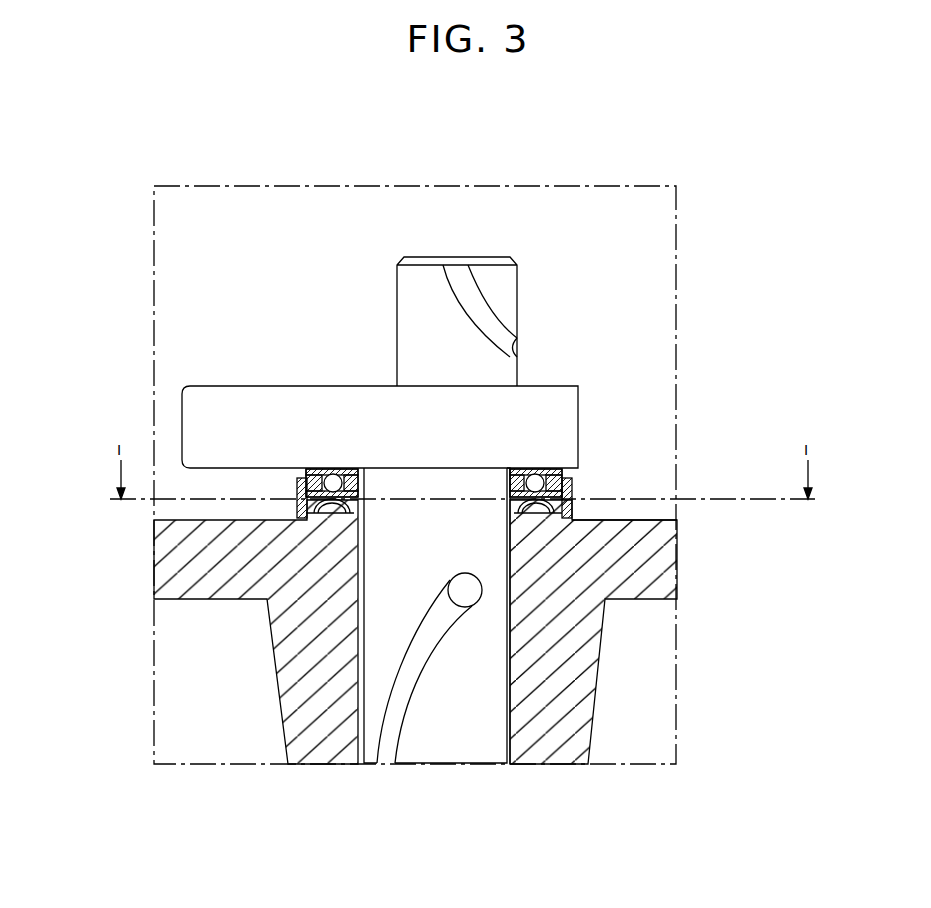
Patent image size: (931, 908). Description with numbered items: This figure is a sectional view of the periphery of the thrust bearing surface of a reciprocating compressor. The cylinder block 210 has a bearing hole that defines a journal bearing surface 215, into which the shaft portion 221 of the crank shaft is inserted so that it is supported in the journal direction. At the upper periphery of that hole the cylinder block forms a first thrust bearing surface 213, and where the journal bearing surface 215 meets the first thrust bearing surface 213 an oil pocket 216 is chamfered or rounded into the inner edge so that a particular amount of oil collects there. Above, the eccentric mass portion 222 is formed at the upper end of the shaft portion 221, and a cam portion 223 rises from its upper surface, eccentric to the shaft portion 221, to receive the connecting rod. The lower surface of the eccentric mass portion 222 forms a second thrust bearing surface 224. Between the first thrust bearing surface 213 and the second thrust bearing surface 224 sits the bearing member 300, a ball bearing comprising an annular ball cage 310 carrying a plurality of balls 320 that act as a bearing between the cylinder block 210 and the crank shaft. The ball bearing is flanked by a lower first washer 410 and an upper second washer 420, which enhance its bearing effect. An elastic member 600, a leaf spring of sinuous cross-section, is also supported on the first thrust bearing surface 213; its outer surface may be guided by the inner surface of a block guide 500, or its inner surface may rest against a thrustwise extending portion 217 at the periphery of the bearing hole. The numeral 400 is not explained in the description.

The cylinder block 210 is at (645, 604).
The first thrust bearing surface 213 is at (527, 517).
The journal bearing surface 215 is at (507, 724).
The oil pocket 216 is at (495, 488).
The thrustwise extending portion 217 is at (513, 516).
The shaft portion 221 is at (426, 732).
The eccentric mass portion 222 is at (197, 395).
The cam portion 223 is at (402, 293).
The second thrust bearing surface 224 is at (295, 485).
The bearing member 300 is at (745, 410).
The ball cage 310 is at (560, 482).
The balls 320 is at (548, 472).
The bearing retainer 400 is at (300, 508).
The first washer 410 is at (575, 487).
The second washer 420 is at (523, 475).
The block guide 500 is at (543, 508).
The elastic member 600 is at (567, 503).